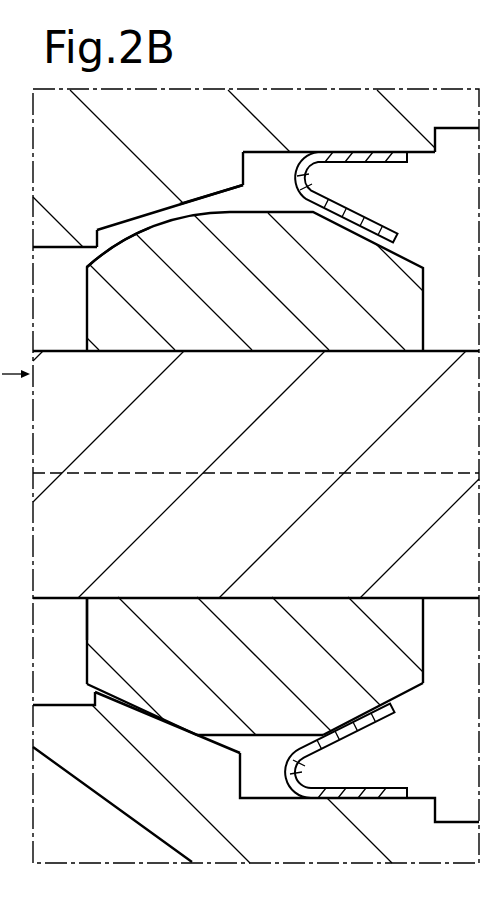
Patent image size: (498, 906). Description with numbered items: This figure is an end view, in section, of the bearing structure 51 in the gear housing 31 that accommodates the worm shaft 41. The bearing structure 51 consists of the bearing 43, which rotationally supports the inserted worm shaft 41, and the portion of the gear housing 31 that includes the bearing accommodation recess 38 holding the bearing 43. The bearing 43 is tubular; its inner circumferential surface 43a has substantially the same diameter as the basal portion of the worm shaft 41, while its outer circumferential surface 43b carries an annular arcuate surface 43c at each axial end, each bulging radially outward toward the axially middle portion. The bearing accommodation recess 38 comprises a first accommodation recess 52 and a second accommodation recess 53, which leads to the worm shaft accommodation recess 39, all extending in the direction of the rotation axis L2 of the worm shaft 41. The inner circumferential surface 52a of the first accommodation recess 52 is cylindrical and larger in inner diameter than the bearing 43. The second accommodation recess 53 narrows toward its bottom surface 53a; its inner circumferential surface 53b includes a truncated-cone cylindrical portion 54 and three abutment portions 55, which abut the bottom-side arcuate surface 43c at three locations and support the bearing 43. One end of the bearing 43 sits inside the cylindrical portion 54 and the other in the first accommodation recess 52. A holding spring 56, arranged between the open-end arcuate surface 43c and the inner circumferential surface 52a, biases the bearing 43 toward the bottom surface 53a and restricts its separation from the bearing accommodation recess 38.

The gear housing 31 is at (108, 801).
The bearing accommodation recess 38 is at (262, 796).
The worm shaft accommodation recess 39 is at (61, 257).
The worm shaft 41 is at (445, 600).
The bearing 43 is at (424, 315).
The inner circumferential surface 43a is at (222, 353).
The outer circumferential surface 43b is at (226, 190).
The arcuate surface 43c is at (96, 692).
The bearing structure 51 is at (84, 616).
The first accommodation recess 52 is at (268, 153).
The inner circumferential surface 52a is at (423, 154).
The second accommodation recess 53 is at (145, 218).
The bottom surface 53a is at (99, 240).
The inner circumferential surface 53b is at (198, 216).
The cylindrical portion 54 is at (126, 226).
The abutment portion 55 is at (227, 738).
The holding spring 56 is at (360, 160).
The rotation axis L2 is at (218, 478).